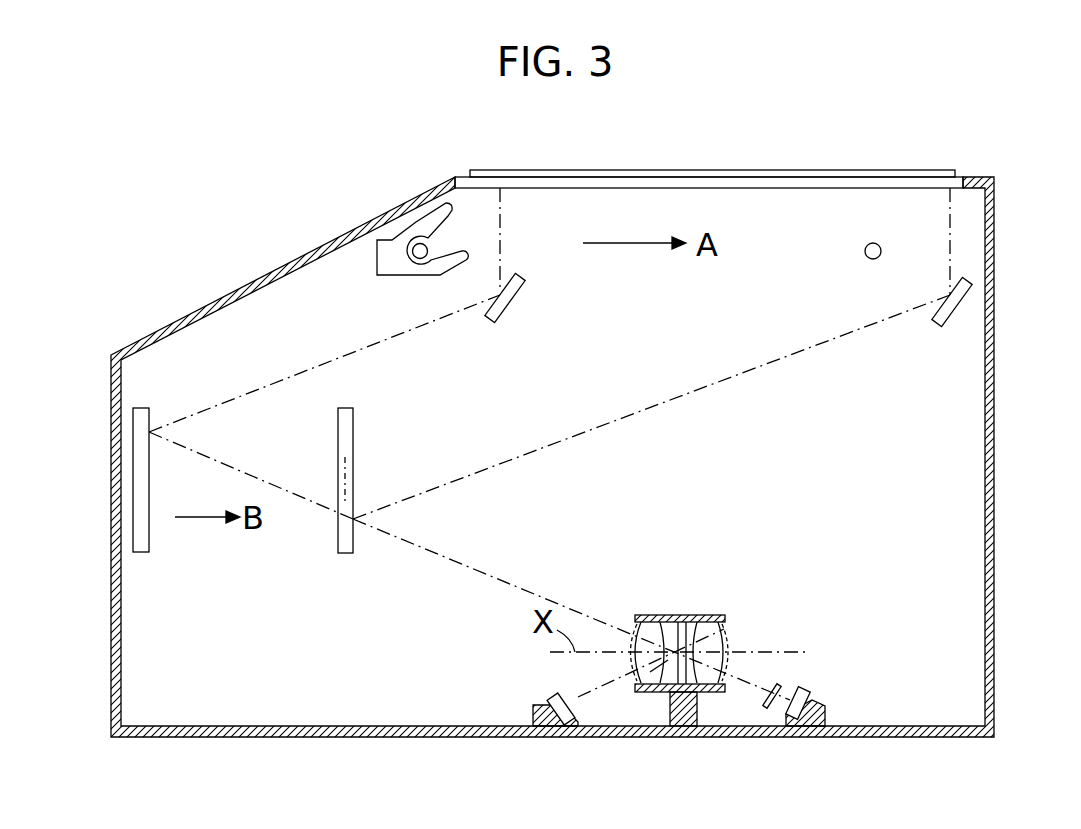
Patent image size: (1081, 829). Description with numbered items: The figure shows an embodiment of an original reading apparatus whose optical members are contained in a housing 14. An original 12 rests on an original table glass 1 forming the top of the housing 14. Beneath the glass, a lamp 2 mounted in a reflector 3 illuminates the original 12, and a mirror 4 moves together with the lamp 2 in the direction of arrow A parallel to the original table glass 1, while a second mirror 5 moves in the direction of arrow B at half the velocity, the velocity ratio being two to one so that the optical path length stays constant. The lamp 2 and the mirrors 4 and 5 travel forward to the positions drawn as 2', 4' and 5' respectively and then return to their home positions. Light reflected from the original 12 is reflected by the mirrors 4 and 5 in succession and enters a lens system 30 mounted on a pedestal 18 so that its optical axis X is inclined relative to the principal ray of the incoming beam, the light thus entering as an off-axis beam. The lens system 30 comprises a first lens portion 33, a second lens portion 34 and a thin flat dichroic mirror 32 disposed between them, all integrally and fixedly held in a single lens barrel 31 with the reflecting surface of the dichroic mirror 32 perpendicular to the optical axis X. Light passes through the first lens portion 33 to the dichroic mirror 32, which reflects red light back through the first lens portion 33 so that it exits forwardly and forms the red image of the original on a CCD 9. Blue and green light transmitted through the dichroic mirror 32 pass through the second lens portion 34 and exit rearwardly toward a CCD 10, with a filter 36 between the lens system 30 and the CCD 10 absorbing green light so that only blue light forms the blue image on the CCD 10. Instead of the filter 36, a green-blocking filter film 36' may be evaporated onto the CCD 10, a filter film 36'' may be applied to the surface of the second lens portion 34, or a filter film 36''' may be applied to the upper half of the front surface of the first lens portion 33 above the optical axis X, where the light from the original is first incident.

The original table glass 1 is at (635, 183).
The original 12 is at (755, 170).
The lamp 2 is at (422, 180).
The forward position of the lamp 2' is at (891, 180).
The reflector 3 is at (407, 203).
The mirror 4 is at (527, 259).
The forward position of the mirror 4' is at (931, 290).
The mirror 5 is at (94, 480).
The forward position of the mirror 5' is at (381, 470).
The CCD 9 is at (552, 696).
The CCD 10 is at (808, 690).
The housing 14 is at (997, 463).
The pedestal 18 is at (670, 705).
The lens system 30 is at (716, 660).
The lens barrel 31 is at (702, 635).
The dichroic mirror 32 is at (645, 635).
The first lens portion 33 is at (648, 692).
The second lens portion 34 is at (703, 693).
The filter 36 is at (792, 759).
The filter film 36' is at (810, 653).
The filter film 36'' is at (792, 614).
The filter film 36''' is at (604, 614).